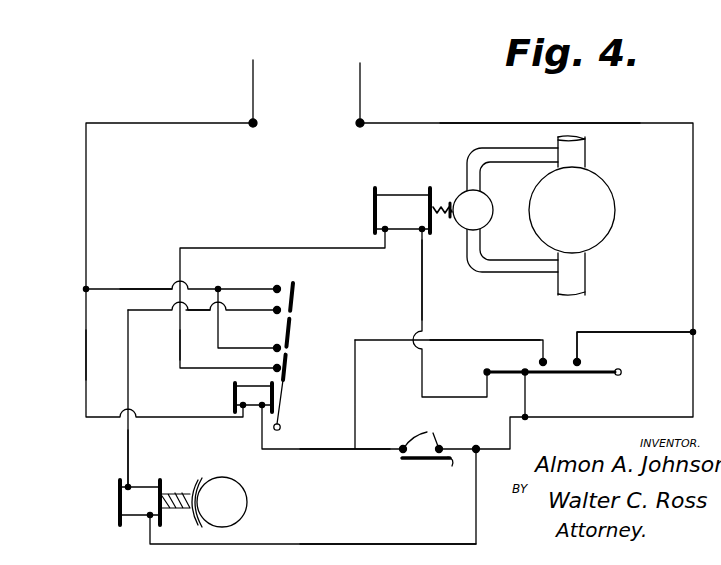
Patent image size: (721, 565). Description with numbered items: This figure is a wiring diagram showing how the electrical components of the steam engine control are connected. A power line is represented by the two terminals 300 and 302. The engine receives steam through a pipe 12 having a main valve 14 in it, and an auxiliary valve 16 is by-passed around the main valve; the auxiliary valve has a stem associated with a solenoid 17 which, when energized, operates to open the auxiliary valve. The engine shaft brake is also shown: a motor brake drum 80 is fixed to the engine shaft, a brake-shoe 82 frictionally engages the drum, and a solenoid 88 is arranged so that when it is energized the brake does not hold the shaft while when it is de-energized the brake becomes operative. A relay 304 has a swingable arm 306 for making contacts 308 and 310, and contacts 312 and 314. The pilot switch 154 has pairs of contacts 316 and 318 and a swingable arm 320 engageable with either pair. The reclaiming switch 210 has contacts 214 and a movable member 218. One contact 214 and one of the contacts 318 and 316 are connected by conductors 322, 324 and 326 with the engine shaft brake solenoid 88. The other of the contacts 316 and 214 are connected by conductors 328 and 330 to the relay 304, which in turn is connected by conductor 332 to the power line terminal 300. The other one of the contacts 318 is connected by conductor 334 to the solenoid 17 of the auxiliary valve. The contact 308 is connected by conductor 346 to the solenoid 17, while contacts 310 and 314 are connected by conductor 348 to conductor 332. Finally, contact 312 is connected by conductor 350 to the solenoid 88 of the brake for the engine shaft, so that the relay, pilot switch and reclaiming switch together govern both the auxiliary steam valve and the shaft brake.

The power line 300 is at (256, 85).
The power line 302 is at (363, 87).
The conductor 322 is at (539, 123).
The solenoid 17 is at (380, 213).
The auxiliary valve 16 is at (485, 220).
The main valve 14 is at (600, 205).
The pipe 12 is at (572, 276).
The conductor 334 is at (422, 262).
The conductor 348 is at (156, 288).
The contact 314 is at (274, 288).
The contact 312 is at (274, 309).
The contact 310 is at (274, 347).
The contact 308 is at (274, 368).
The conductor 346 is at (180, 348).
The conductor 332 is at (86, 358).
The relay 304 is at (228, 405).
The swingable arm 306 is at (282, 420).
The conductor 328 is at (500, 340).
The contacts 316 is at (565, 360).
The conductor 324 is at (640, 332).
The contacts 318 is at (490, 376).
The swingable arm 320 is at (545, 376).
The pilot switch 154 is at (572, 382).
The conductor 350 is at (128, 462).
The contacts 214 is at (440, 439).
The reclaiming switch 210 is at (406, 478).
The movable member 218 is at (425, 462).
The brake-shoe 82 is at (198, 487).
The motor brake drum 80 is at (247, 502).
The solenoid 88 is at (108, 511).
The conductor 326 is at (406, 543).
The conductor 330 is at (343, 450).